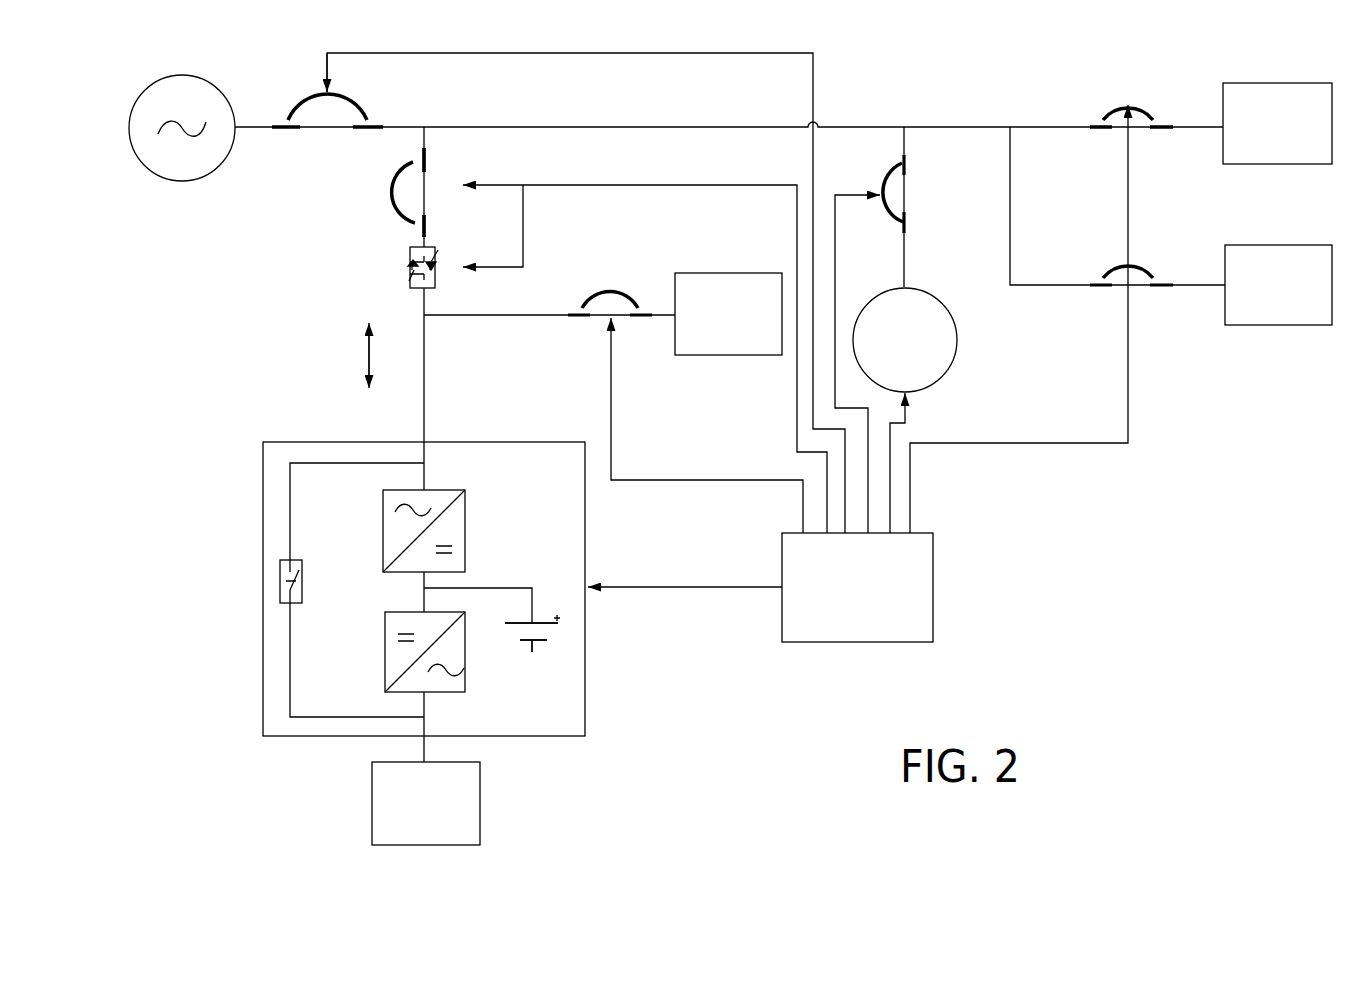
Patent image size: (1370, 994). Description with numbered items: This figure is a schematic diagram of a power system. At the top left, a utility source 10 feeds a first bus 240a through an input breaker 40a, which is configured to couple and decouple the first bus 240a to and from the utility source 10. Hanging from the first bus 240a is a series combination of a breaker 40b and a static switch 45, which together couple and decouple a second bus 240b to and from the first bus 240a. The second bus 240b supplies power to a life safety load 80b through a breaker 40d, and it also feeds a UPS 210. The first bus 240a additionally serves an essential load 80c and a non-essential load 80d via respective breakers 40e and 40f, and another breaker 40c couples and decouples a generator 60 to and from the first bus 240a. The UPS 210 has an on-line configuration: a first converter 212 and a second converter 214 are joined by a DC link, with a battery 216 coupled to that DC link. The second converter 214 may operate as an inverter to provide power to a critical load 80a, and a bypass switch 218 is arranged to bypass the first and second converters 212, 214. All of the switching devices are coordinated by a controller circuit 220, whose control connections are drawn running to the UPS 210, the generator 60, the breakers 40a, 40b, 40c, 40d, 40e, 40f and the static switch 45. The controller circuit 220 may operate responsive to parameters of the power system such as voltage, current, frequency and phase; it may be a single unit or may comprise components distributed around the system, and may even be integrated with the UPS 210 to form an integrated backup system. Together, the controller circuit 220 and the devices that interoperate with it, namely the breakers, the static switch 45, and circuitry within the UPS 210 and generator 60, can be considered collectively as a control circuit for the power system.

The utility source 10 is at (182, 182).
The input breaker 40a is at (312, 91).
The breaker 40b is at (382, 188).
The breaker 40c is at (911, 187).
The breaker 40d is at (578, 290).
The breaker 40e is at (1099, 91).
The breaker 40f is at (1094, 261).
The static switch 45 is at (385, 258).
The generator 60 is at (957, 338).
The critical load 80a is at (484, 800).
The life safety load 80b is at (727, 273).
The essential load 80c is at (1278, 83).
The non-essential load 80d is at (1278, 245).
The UPS 210 is at (468, 442).
The first converter 212 is at (468, 528).
The second converter 214 is at (383, 648).
The battery 216 is at (513, 672).
The bypass switch 218 is at (304, 577).
The controller circuit 220 is at (934, 585).
The first bus 240a is at (745, 126).
The second bus 240b is at (456, 320).